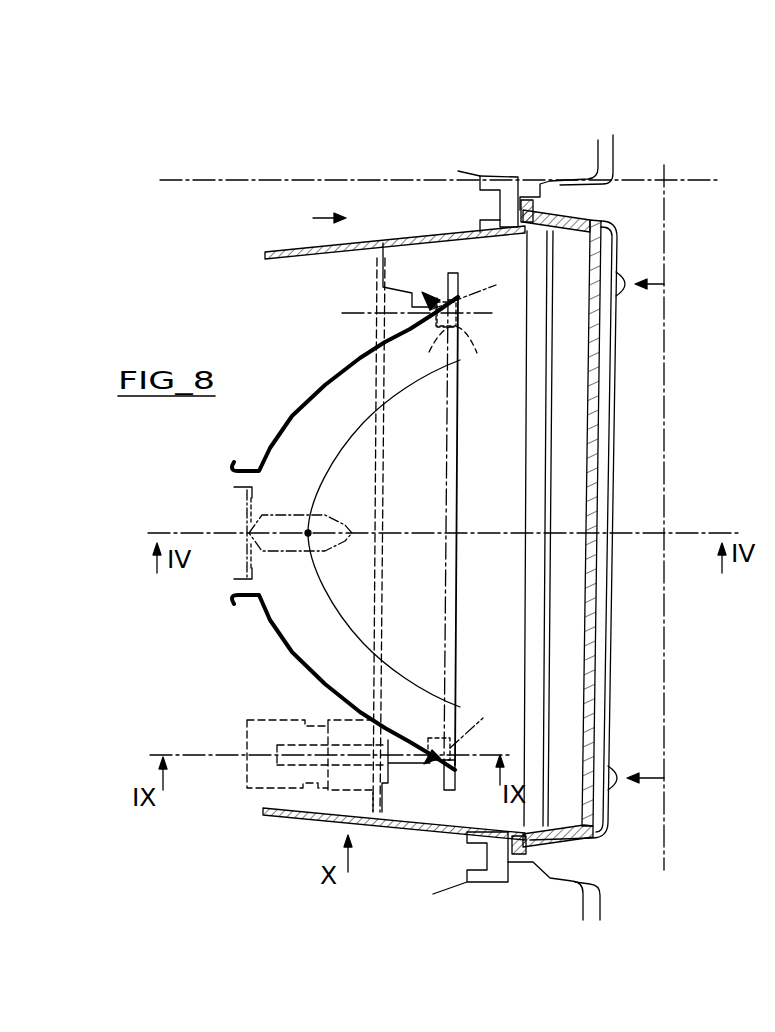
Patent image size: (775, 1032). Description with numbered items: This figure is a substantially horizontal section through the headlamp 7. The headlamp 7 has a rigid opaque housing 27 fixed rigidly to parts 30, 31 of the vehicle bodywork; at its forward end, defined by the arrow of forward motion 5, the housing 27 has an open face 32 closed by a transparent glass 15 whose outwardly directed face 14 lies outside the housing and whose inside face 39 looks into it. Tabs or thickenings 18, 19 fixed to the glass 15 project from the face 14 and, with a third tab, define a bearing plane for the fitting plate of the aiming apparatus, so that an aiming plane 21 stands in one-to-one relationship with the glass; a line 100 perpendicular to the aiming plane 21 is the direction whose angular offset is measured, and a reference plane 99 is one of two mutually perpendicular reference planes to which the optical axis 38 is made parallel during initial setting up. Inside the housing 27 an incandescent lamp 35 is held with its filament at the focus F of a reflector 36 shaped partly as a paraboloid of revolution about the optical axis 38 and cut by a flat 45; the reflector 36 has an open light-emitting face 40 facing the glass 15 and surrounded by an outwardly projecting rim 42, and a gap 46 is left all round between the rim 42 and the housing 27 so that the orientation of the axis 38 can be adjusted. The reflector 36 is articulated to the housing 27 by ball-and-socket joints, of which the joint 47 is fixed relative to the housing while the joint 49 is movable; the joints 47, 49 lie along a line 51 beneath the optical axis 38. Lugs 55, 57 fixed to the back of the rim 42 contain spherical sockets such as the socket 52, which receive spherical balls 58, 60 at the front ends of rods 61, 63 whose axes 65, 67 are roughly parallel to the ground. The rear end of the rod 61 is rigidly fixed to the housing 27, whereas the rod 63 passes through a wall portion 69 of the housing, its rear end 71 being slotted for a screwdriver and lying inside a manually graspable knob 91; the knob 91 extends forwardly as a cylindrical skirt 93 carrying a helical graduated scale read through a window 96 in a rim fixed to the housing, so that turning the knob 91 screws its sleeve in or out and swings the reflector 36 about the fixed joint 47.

The direction of forward motion 5 is at (312, 214).
The headlamp 7 is at (266, 836).
The outwardly directed face of the glass 14 is at (608, 425).
The transparent glass 15 is at (602, 640).
The tab or thickening 18 is at (626, 270).
The tab or thickening 19 is at (615, 792).
The aiming plane 21 is at (667, 702).
The housing 27 is at (282, 250).
The part of vehicle bodywork 30 is at (488, 220).
The part of vehicle bodywork 31 is at (478, 862).
The open face of the housing 32 is at (549, 480).
The incandescent lamp 35 is at (332, 512).
The reflector 36 is at (305, 395).
The optical axis 38 is at (386, 536).
The inside face of the glass 39 is at (566, 400).
The open face of the reflector 40 is at (460, 582).
The rim 42 is at (460, 276).
The flat 45 is at (432, 487).
The gap 46 is at (448, 273).
The ball-and-socket joint 47 is at (477, 291).
The ball-and-socket joint 49 is at (482, 722).
The line 51 is at (438, 655).
The spherical socket 52 is at (465, 350).
The lug 55 is at (442, 298).
The lug 57 is at (444, 773).
The spherical ball 58 is at (437, 326).
The spherical ball 60 is at (442, 742).
The rod 61 is at (417, 303).
The rod 63 is at (400, 768).
The rod axis 65 is at (352, 312).
The rod axis 67 is at (217, 754).
The wall portion 69 is at (373, 828).
The rear end of rod 71 is at (277, 745).
The knob 91 is at (258, 788).
The cylindrical skirt 93 is at (315, 787).
The window 96 is at (347, 790).
The reference plane 99 is at (188, 183).
The line perpendicular to the aiming plane 100 is at (670, 530).
The focus F is at (312, 540).